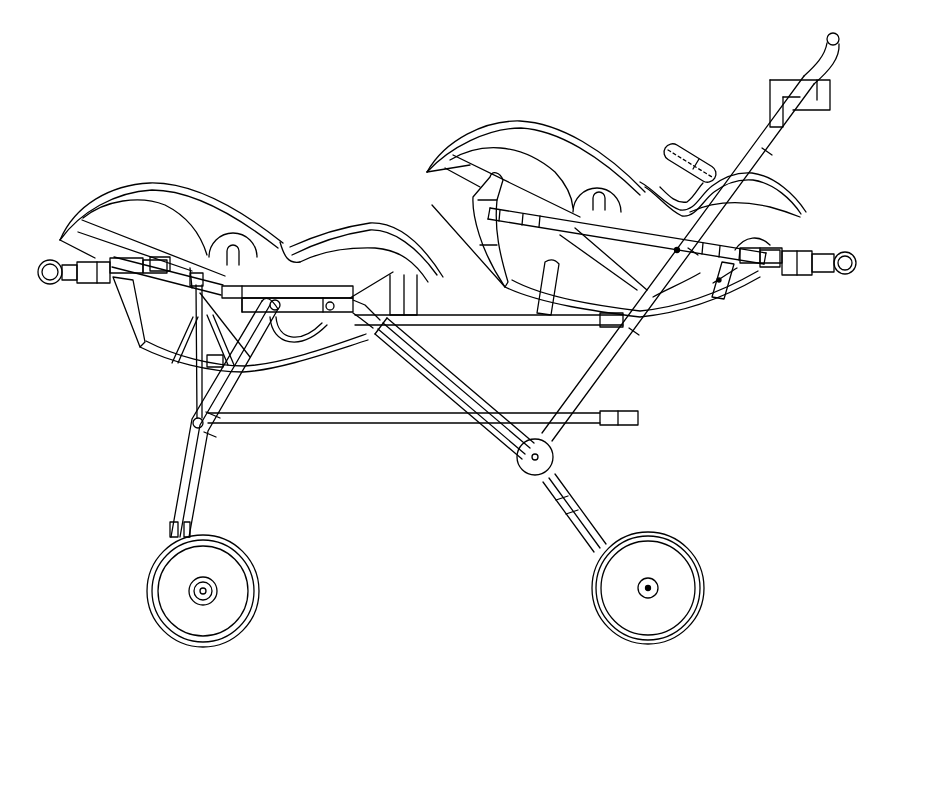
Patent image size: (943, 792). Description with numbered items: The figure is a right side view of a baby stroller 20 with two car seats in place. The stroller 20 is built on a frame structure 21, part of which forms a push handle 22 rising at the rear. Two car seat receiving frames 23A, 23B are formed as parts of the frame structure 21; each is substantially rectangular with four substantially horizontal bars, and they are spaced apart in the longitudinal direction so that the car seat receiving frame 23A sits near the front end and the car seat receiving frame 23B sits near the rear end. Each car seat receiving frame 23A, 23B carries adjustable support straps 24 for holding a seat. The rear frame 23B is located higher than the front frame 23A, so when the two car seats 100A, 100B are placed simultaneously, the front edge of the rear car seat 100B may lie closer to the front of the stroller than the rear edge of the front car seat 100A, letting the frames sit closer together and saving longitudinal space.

The baby stroller 20 is at (190, 130).
The frame structure 21 is at (192, 440).
The push handle 22 is at (826, 40).
The car seat receiving frame 23A is at (287, 294).
The car seat receiving frame 23B is at (613, 236).
The adjustable support straps 24 is at (118, 297).
The car seat 100A is at (198, 217).
The car seat 100B is at (529, 140).